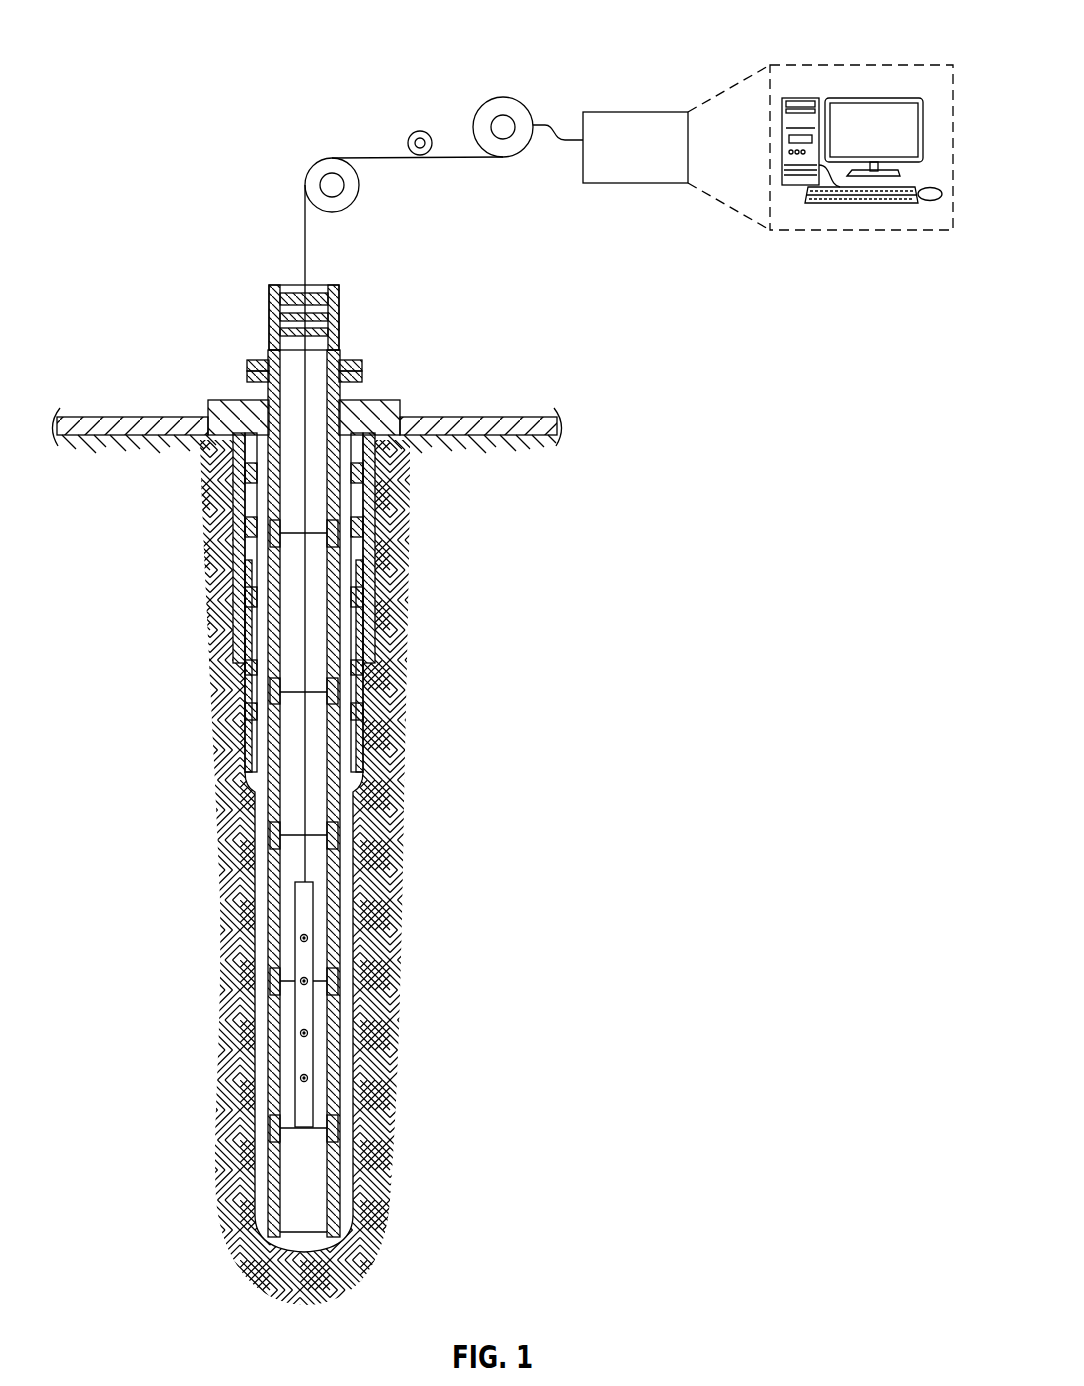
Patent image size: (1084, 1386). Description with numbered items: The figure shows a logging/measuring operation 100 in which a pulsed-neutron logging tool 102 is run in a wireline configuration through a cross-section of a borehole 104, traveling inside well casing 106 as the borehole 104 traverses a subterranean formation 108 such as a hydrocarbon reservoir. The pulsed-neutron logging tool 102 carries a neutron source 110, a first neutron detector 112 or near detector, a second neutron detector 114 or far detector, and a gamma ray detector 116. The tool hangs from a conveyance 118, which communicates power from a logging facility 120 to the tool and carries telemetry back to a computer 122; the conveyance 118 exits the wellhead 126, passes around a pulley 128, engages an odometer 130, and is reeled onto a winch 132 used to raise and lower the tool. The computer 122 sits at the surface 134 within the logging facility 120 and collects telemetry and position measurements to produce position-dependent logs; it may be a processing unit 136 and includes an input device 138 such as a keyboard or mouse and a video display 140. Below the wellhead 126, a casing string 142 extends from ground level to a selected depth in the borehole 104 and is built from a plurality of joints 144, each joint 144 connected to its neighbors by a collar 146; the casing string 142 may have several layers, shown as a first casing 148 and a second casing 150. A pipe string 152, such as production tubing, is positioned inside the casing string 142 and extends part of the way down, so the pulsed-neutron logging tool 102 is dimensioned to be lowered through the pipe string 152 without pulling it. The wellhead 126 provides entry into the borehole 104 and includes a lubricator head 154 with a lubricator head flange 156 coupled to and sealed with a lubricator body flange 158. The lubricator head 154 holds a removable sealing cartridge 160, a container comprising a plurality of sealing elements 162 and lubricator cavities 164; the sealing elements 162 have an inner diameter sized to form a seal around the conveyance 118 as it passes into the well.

The logging/measuring operation 100 is at (653, 1108).
The pulsed-neutron logging tool 102 is at (290, 1003).
The borehole 104 is at (202, 823).
The well casing 106 is at (350, 773).
The subterranean formation 108 is at (552, 699).
The neutron source 110 is at (308, 938).
The first neutron detector 112 is at (308, 981).
The second neutron detector 114 is at (308, 1033).
The gamma ray detector 116 is at (308, 1078).
The conveyance 118 is at (303, 258).
The logging facility 120 is at (820, 147).
The computer 122 is at (643, 112).
The wellhead 126 is at (500, 288).
The pulley 128 is at (310, 158).
The odometer 130 is at (412, 135).
The winch 132 is at (483, 103).
The surface 134 is at (108, 418).
The processing unit 136 is at (793, 98).
The input device 138 is at (855, 203).
The video display 140 is at (907, 98).
The casing string 142 is at (223, 640).
The joint 144 is at (252, 670).
The collar 146 is at (252, 722).
The first casing 148 is at (357, 688).
The second casing 150 is at (367, 636).
The pipe string 152 is at (338, 1190).
The lubricator head 154 is at (432, 367).
The lubricator head flange 156 is at (362, 363).
The lubricator body flange 158 is at (362, 380).
The sealing cartridge 160 is at (318, 285).
The sealing element 162 is at (320, 320).
The lubricator cavity 164 is at (320, 332).